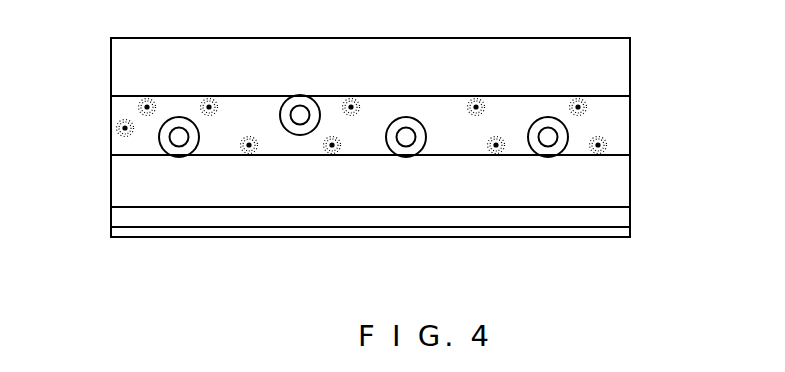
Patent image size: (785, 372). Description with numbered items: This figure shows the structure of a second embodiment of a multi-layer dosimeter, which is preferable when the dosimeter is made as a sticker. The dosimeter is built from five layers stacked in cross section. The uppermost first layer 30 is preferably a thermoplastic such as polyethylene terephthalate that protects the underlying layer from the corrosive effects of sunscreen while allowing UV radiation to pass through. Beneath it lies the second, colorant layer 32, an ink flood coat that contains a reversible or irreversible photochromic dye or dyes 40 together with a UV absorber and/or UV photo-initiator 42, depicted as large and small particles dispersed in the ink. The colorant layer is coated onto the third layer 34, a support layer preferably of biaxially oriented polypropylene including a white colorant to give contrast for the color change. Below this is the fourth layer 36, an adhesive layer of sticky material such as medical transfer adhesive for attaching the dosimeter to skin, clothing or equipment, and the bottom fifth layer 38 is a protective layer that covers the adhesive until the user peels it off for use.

The first layer 30 is at (655, 69).
The second, colorant layer 32 is at (655, 127).
The third layer 34 is at (655, 180).
The fourth layer 36 is at (655, 218).
The fifth layer 38 is at (655, 231).
The photochromic dye or dyes 40 is at (158, 137).
The UV absorber and/or UV photo-initiator 42 is at (116, 127).